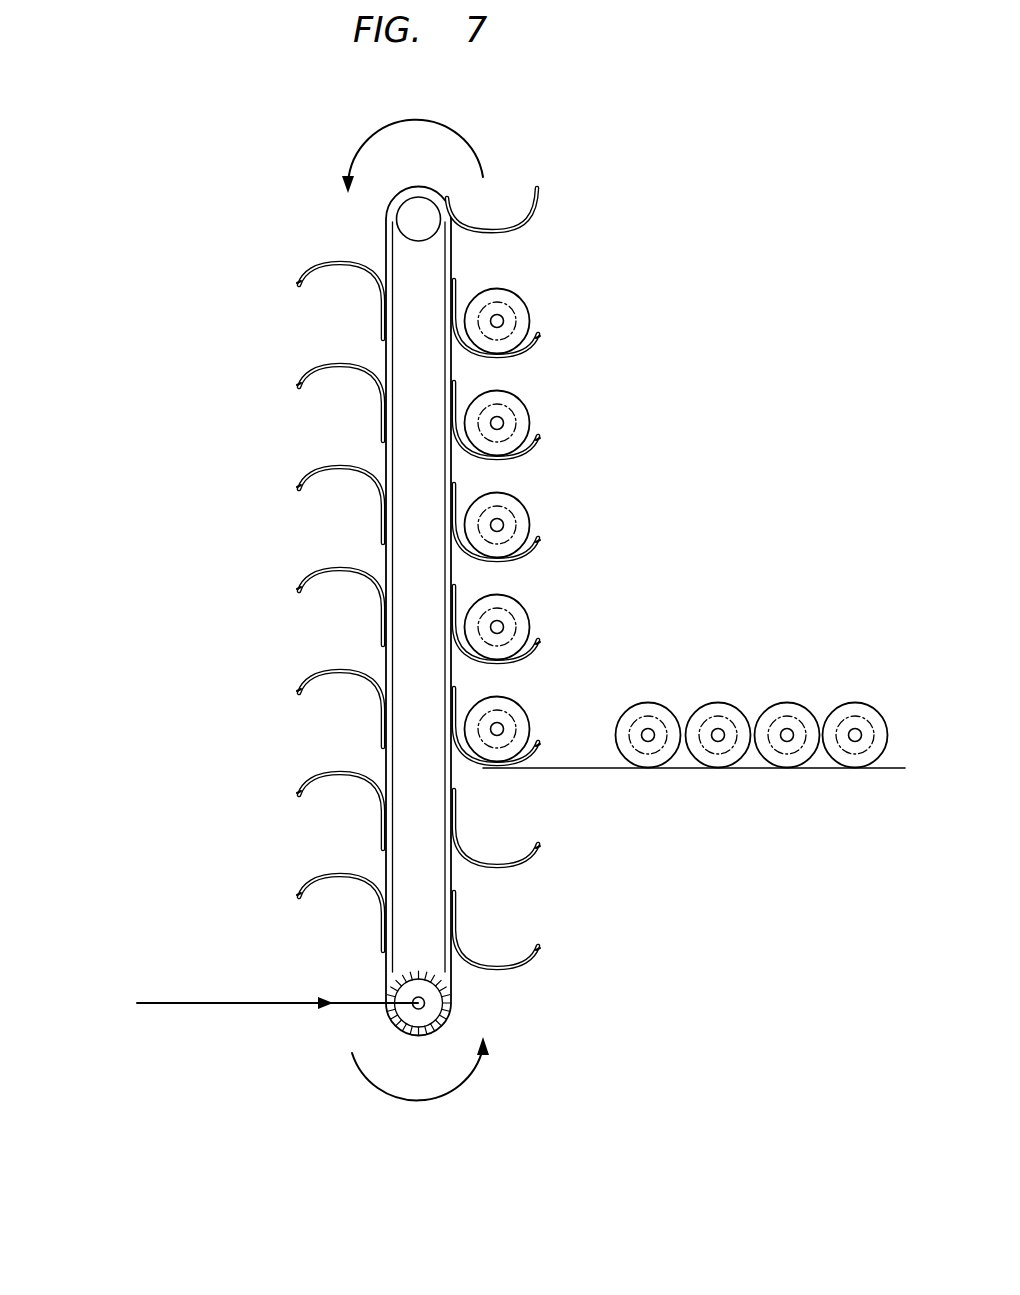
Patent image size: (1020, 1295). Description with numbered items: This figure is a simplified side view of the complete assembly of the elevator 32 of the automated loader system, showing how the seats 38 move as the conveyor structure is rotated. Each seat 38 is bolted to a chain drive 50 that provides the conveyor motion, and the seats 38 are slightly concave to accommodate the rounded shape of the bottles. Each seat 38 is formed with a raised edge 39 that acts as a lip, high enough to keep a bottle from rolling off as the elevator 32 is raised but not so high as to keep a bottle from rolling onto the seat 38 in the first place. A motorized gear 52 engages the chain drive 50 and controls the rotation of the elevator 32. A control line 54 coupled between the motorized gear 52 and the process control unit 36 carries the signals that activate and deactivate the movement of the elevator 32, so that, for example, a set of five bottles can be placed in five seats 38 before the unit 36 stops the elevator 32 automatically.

The elevator 32 is at (752, 386).
The process control unit 36 is at (92, 1005).
The seats 38 is at (310, 570).
The raised edge 39 is at (297, 283).
The chain drive 50 is at (390, 768).
The motorized gear 52 is at (417, 1037).
The control line 54 is at (228, 1004).